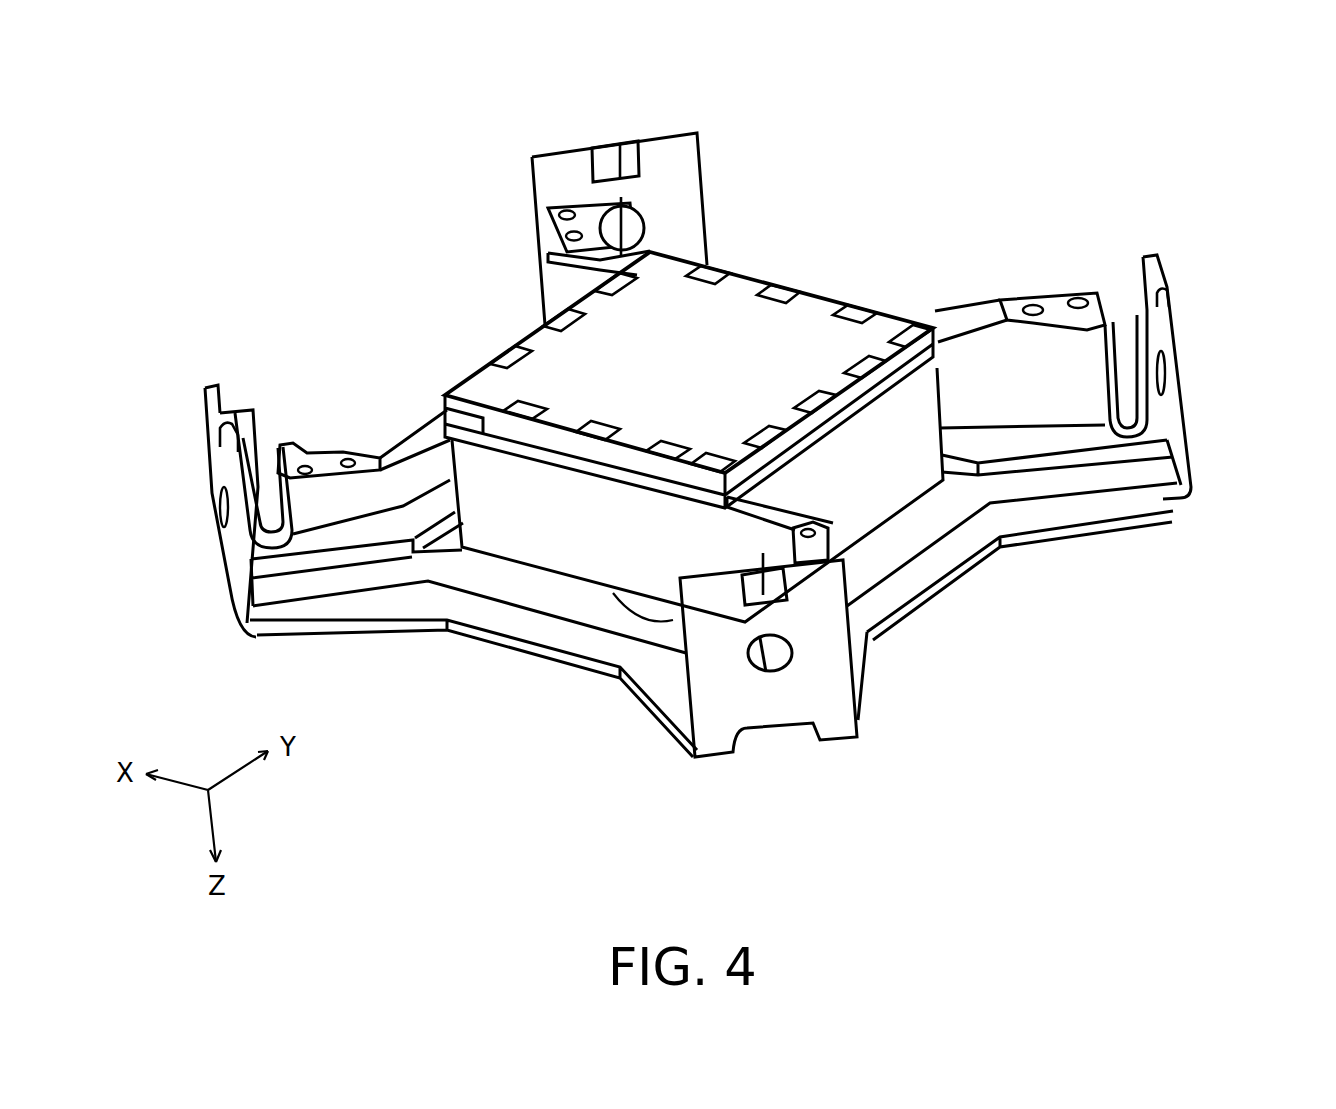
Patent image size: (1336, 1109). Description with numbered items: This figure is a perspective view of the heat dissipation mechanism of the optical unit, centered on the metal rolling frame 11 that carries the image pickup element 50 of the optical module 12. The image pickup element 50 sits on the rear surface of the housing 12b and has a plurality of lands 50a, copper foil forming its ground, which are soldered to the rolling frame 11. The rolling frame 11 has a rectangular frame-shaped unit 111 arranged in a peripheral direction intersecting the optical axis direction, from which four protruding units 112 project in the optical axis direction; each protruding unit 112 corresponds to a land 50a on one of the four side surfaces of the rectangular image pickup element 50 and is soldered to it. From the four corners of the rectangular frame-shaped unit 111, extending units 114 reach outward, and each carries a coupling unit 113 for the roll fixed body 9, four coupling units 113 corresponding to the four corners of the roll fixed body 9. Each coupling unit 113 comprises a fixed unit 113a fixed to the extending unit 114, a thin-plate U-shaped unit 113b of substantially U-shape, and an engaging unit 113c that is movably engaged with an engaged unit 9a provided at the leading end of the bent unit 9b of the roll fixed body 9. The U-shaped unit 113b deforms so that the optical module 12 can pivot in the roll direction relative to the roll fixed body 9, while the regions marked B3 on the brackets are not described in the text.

The roll fixed body 9 is at (370, 633).
The engaged unit 9a is at (612, 147).
The bent unit 9b is at (688, 133).
The rolling frame 11 is at (555, 445).
The optical module 12 is at (1235, 632).
The housing 12b is at (905, 405).
The image pickup element 50 is at (745, 362).
The land 50a is at (708, 272).
The rectangular frame-shaped unit 111 is at (820, 425).
The protruding unit 112 is at (778, 290).
The coupling unit 113 is at (590, 212).
The fixed unit 113a is at (565, 205).
The U-shaped unit 113b is at (643, 225).
The engaging unit 113c is at (618, 142).
The extending unit 114 is at (600, 260).
The bolt slot B3 is at (568, 232).